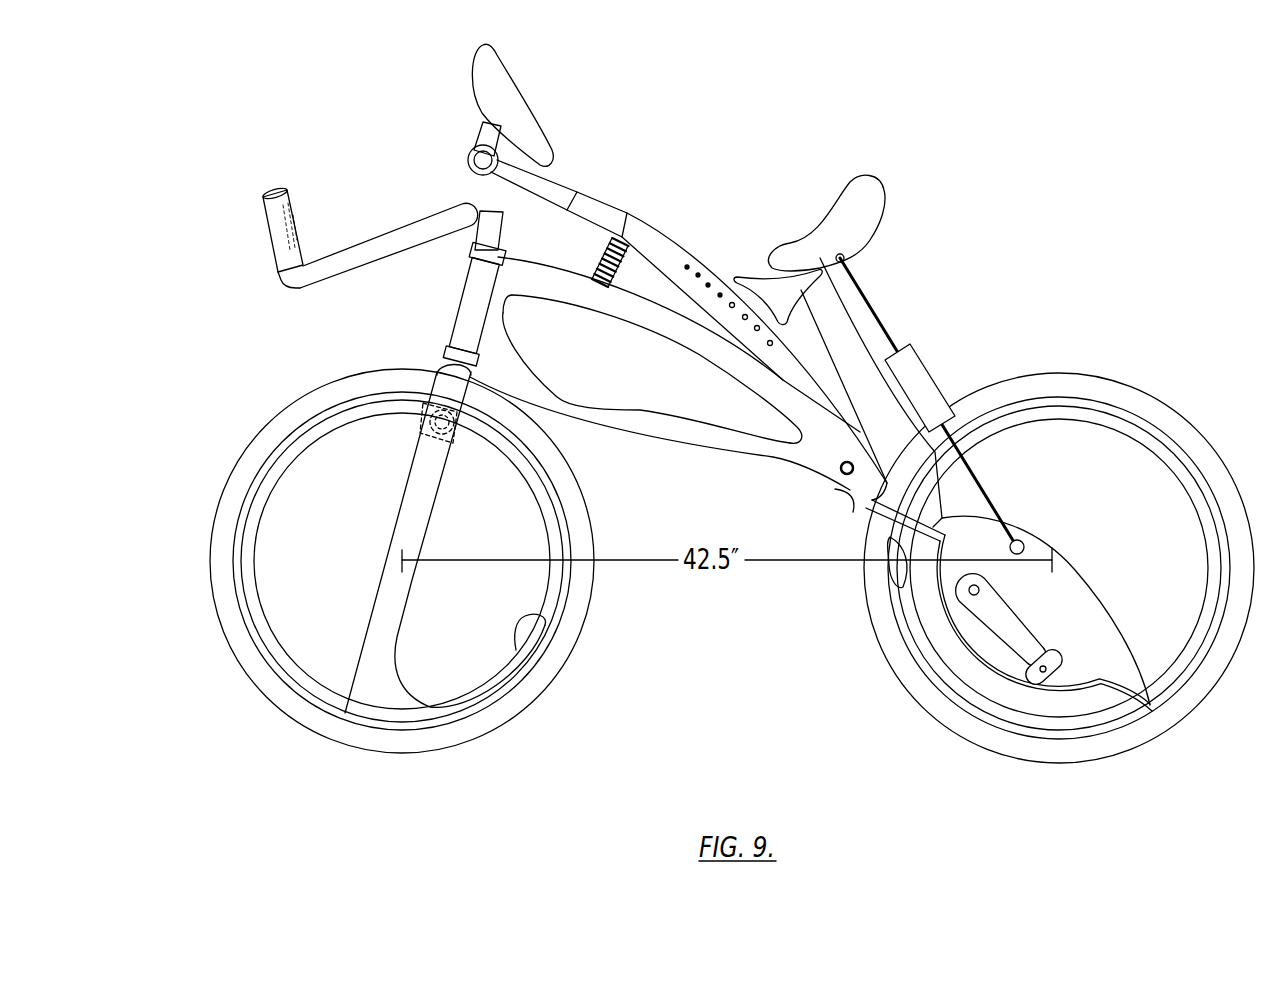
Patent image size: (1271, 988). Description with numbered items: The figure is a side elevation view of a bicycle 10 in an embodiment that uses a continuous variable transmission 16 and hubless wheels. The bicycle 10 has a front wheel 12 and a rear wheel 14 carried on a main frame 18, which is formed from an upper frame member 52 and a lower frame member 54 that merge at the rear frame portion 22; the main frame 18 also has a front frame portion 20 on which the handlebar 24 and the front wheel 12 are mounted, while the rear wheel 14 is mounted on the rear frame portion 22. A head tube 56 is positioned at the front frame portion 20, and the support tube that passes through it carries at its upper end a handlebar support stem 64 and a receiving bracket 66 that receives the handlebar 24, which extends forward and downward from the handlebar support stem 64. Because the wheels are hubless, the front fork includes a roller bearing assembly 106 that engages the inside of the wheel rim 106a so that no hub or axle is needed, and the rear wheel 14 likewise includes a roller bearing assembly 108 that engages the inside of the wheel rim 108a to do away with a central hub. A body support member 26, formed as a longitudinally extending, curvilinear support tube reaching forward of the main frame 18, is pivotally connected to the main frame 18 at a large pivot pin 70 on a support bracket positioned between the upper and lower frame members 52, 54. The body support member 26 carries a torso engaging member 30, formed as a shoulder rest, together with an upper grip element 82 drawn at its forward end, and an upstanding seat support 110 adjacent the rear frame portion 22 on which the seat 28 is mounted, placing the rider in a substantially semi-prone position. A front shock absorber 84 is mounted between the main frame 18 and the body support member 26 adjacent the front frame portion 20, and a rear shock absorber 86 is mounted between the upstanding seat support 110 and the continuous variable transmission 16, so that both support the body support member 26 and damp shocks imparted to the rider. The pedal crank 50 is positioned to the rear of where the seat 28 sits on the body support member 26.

The bicycle 10 is at (243, 237).
The front wheel 12 is at (442, 762).
The rear wheel 14 is at (1030, 770).
The continuous variable transmission 16 is at (1050, 552).
The main frame 18 is at (690, 450).
The front frame portion 20 is at (420, 310).
The rear frame portion 22 is at (850, 514).
The handlebar 24 is at (356, 237).
The body support member 26 is at (635, 211).
The seat 28 is at (880, 188).
The torso engaging member 30 is at (528, 108).
The pedal crank 50 is at (1017, 633).
The upper frame member 52 is at (658, 328).
The lower frame member 54 is at (677, 410).
The head tube 56 is at (463, 323).
The handlebar support stem 64 is at (503, 250).
The receiving bracket 66 is at (470, 197).
The pivot pin 70 is at (840, 470).
The grip 82 is at (503, 68).
The front shock absorber 84 is at (620, 248).
The rear shock absorber 86 is at (913, 363).
The roller bearing assembly 106 is at (450, 448).
The wheel rim 106a is at (543, 621).
The roller bearing assembly 108 is at (961, 660).
The wheel rim 108a is at (1225, 483).
The upstanding seat support 110 is at (813, 300).